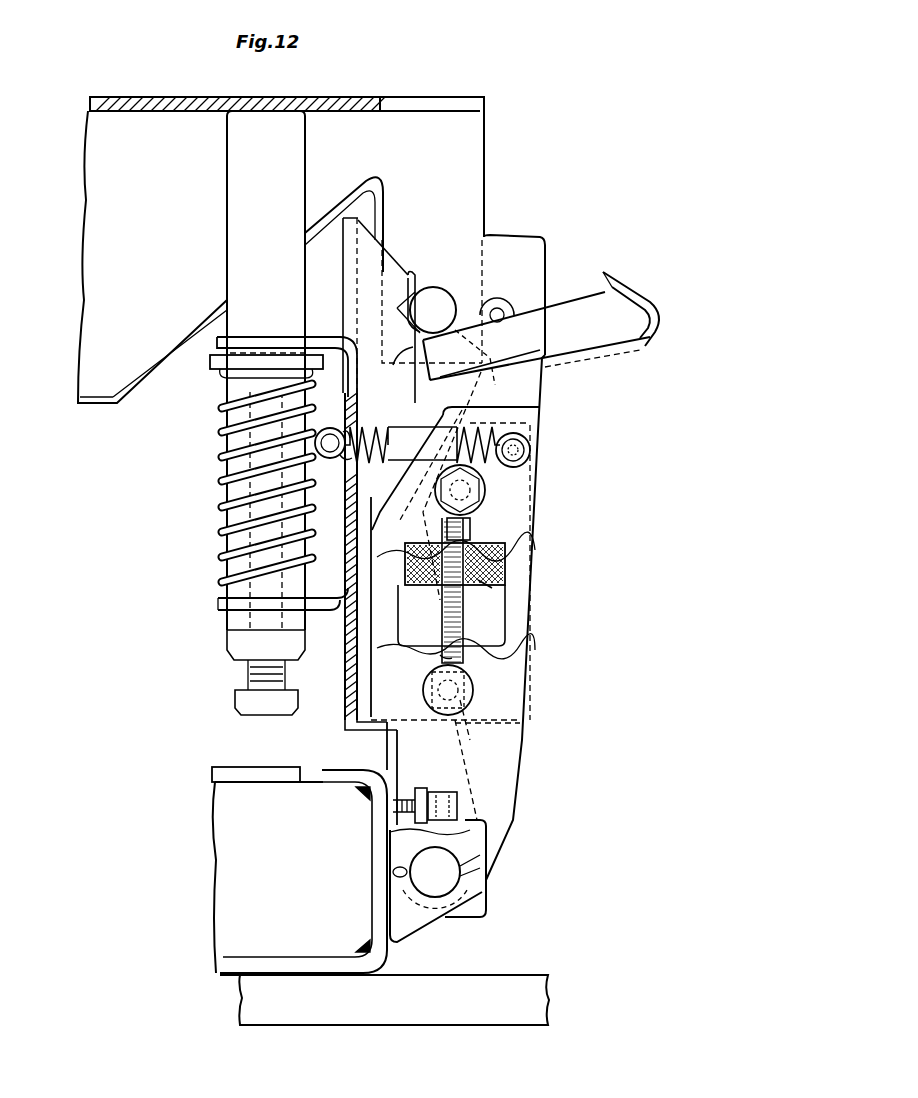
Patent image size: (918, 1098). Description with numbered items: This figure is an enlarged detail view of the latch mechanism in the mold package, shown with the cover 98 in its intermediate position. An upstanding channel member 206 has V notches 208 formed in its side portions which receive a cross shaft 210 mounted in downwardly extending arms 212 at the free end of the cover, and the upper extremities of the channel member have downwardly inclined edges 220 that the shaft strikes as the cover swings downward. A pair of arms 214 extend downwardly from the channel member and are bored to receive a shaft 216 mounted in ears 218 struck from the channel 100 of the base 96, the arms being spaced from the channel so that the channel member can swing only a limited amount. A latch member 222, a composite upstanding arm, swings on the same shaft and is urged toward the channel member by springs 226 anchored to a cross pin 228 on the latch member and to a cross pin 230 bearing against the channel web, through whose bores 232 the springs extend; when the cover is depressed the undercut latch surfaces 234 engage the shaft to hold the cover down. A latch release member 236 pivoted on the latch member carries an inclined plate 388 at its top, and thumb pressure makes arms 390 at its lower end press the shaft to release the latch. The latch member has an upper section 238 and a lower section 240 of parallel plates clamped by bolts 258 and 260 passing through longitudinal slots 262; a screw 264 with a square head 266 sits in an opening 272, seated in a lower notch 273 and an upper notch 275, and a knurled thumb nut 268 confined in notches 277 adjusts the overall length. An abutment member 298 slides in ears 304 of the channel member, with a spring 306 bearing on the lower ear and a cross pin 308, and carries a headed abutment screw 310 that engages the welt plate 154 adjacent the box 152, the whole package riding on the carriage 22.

The cover 98 is at (130, 97).
The downwardly extending arms 212 is at (484, 193).
The abutment member 298 is at (227, 192).
The headed abutment screw 310 is at (250, 670).
The upstanding channel member 206 is at (343, 296).
The downwardly inclined edges 220 is at (383, 236).
The V notches 208 is at (408, 275).
The cross shaft 210 is at (442, 290).
The arms 390 is at (427, 314).
The upper section 238 is at (575, 238).
The latch release member 236 is at (568, 300).
The inclined plate 388 is at (625, 283).
The undercut latch surfaces 234 is at (490, 372).
The ears 304 is at (250, 343).
The cross pin 308 is at (210, 367).
The spring 306 is at (222, 531).
The springs 226 is at (360, 418).
The cross pin 230 is at (330, 458).
The bores 232 is at (358, 468).
The cross pin 228 is at (530, 451).
The longitudinal slots 262 is at (468, 418).
The clamping bolt 258 is at (486, 491).
The square head 266 is at (470, 524).
The notch 275 is at (510, 540).
The knurled thumb nut 268 is at (505, 568).
The opening 272 is at (469, 590).
The screw 264 is at (440, 636).
The notches 277 is at (492, 588).
The latch member 222 is at (562, 591).
The notch 273 is at (442, 660).
The clamping bolt 260 is at (465, 700).
The lower section 240 is at (526, 691).
The welt plate 154 is at (236, 767).
The box 152 is at (215, 822).
The channel 100 is at (372, 872).
The base 96 is at (268, 960).
The carriage 22 is at (548, 1010).
The arms 214 is at (387, 752).
The shaft 216 is at (435, 898).
The ears 218 is at (486, 897).